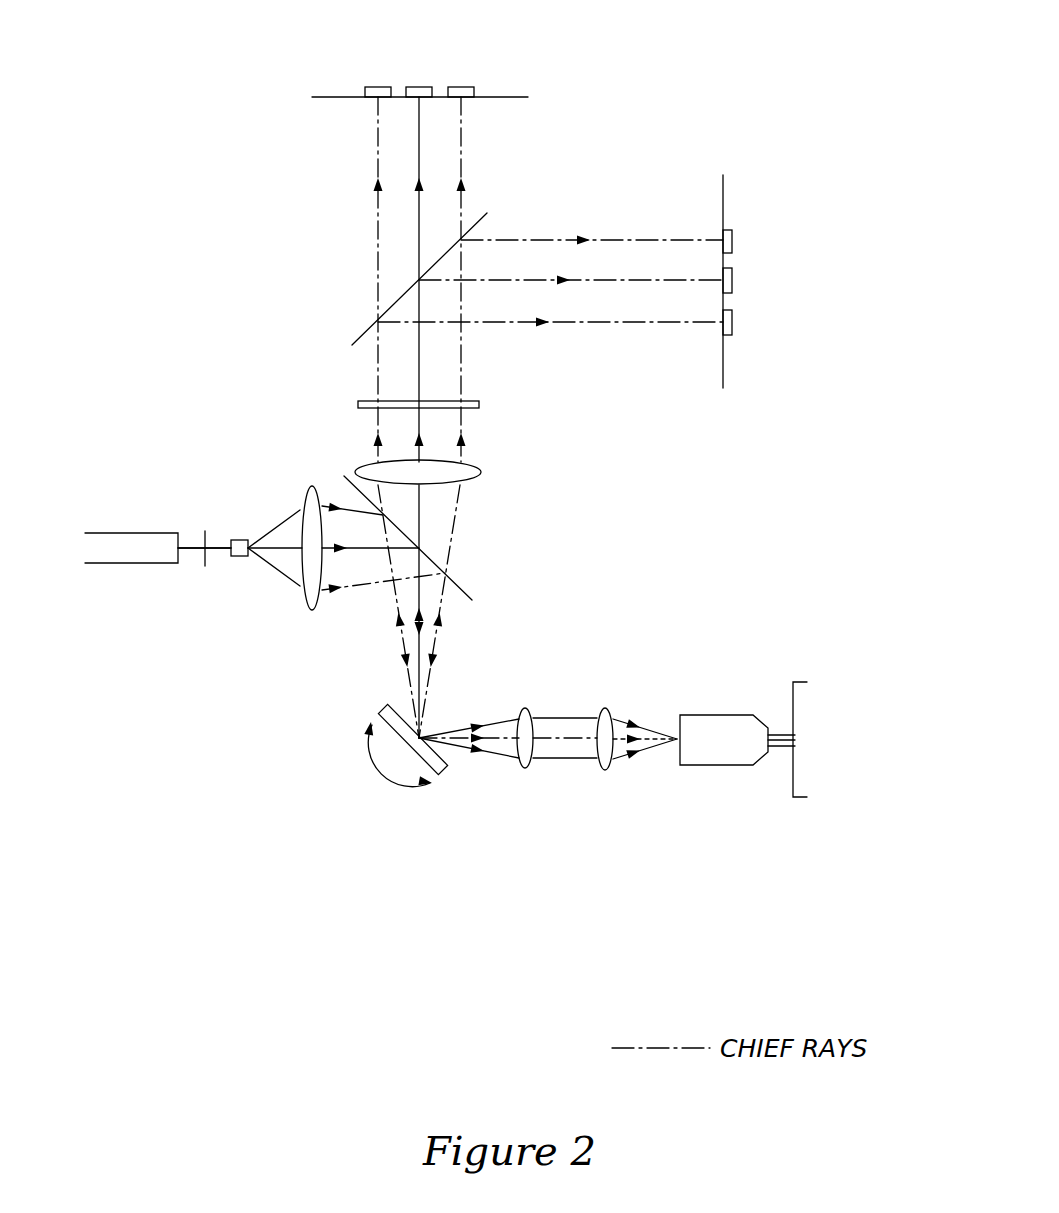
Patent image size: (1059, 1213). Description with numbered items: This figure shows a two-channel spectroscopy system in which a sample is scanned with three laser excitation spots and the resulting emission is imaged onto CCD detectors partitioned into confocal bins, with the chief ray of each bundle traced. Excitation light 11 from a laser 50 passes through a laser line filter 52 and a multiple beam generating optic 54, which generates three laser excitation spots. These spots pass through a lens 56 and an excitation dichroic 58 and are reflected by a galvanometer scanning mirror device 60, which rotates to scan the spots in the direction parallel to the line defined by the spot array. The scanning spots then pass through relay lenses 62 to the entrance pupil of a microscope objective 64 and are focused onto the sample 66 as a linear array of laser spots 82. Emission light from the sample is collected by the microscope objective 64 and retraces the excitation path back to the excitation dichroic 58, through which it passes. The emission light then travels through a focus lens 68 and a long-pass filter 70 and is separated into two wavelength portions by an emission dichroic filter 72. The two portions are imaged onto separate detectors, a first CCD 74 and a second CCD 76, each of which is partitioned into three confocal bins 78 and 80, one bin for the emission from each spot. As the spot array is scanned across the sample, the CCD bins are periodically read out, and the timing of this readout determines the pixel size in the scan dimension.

The excitation light 11 is at (220, 557).
The laser 50 is at (162, 564).
The laser line filter 52 is at (200, 559).
The multiple beam generating optic 54 is at (240, 546).
The lens 56 is at (307, 566).
The excitation dichroic 58 is at (455, 581).
The scanning mirror device 60 is at (420, 750).
The relay lenses 62 is at (607, 758).
The microscope objective 64 is at (738, 767).
The sample 66 is at (810, 768).
The focus lens 68 is at (473, 474).
The long-pass filter 70 is at (478, 402).
The emission dichroic filter 72 is at (370, 323).
The CCD 1 74 is at (707, 267).
The CCD 2 76 is at (437, 98).
The confocal bins 78 is at (732, 326).
The confocal bins 80 is at (460, 88).
The linear array of laser spots 82 is at (778, 735).